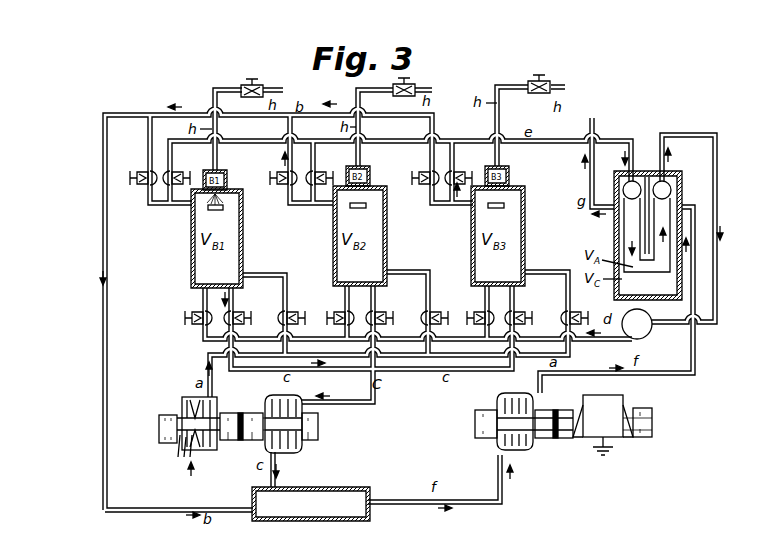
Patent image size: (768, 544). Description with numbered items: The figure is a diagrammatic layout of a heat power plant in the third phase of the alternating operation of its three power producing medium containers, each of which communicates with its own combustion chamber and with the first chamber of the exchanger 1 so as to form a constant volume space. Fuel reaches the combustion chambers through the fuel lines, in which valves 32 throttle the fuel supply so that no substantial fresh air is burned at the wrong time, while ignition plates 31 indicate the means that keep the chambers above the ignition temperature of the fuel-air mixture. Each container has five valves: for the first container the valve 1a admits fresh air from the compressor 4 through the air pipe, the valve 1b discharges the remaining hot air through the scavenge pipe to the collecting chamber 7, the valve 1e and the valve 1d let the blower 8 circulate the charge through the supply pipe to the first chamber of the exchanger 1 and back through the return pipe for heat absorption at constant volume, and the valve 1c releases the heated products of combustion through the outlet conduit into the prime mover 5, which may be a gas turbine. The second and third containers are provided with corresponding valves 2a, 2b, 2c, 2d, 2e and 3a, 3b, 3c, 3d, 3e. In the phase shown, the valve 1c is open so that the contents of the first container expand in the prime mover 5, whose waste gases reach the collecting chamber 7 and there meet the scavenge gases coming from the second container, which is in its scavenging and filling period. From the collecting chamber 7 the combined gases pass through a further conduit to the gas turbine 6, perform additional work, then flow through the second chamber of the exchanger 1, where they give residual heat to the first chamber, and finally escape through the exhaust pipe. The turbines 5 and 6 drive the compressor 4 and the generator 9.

The exchanger 1 is at (614, 236).
The compressor 4 is at (182, 408).
The prime mover 5 is at (302, 449).
The gas turbine 6 is at (537, 441).
The collecting chamber 7 is at (311, 504).
The blower 8 is at (647, 335).
The generator 9 is at (622, 439).
The ignition plates 31 is at (226, 210).
The valves 32 is at (252, 80).
The valve 1a is at (295, 312).
The valve 1b is at (137, 169).
The valve 1c is at (240, 310).
The valve 1d is at (184, 318).
The valve 1e is at (178, 169).
The valve 2a is at (435, 309).
The valve 2b is at (279, 169).
The valve 2c is at (381, 309).
The valve 2d is at (334, 321).
The valve 2e is at (319, 168).
The valve 3a is at (578, 309).
The valve 3b is at (421, 168).
The valve 3c is at (519, 309).
The valve 3d is at (477, 309).
The valve 3e is at (458, 168).